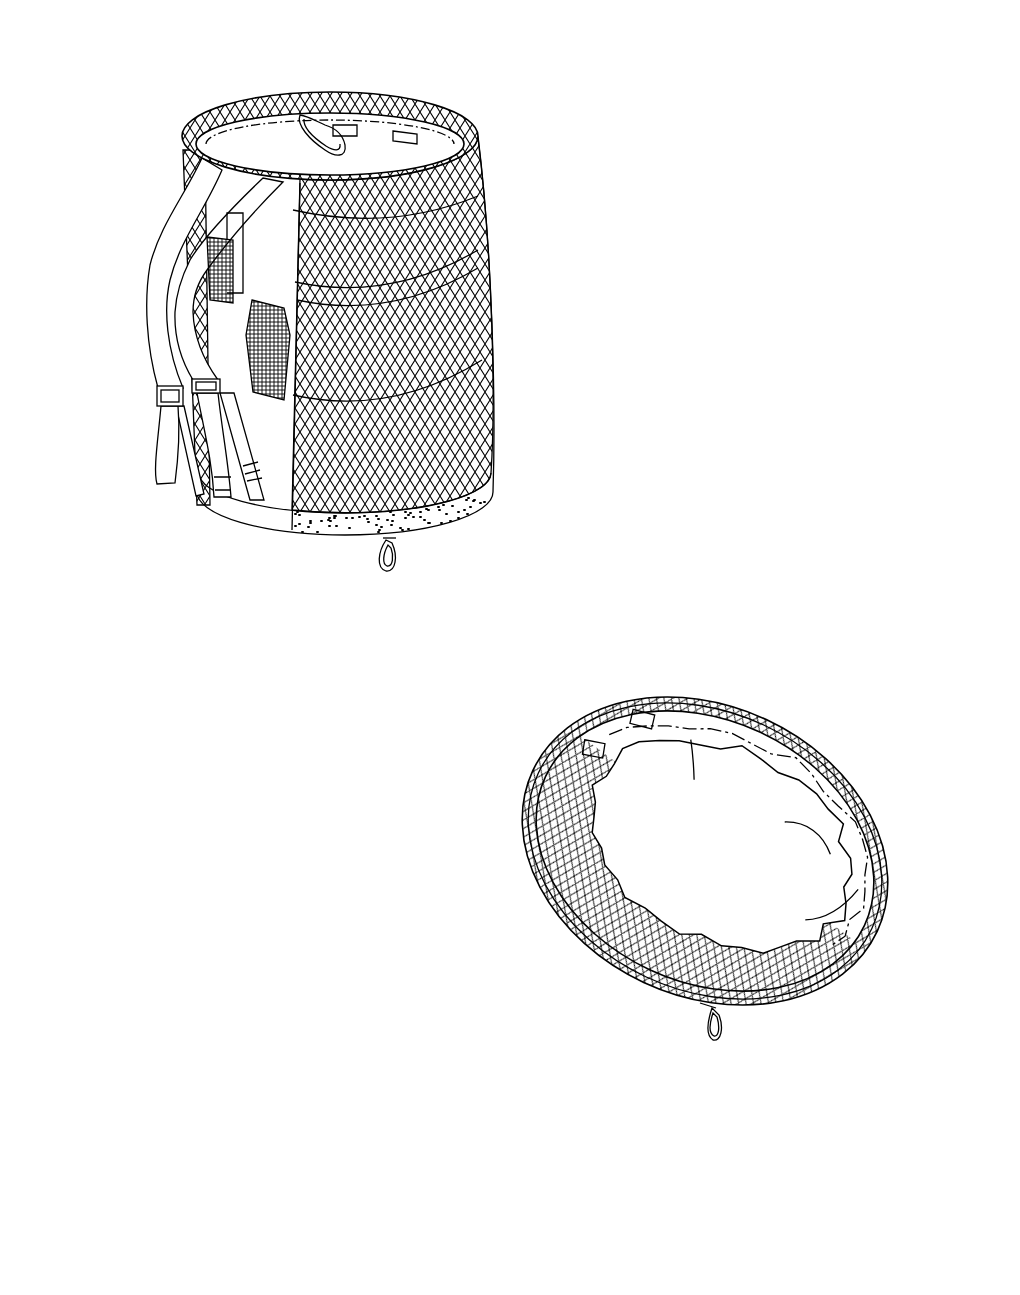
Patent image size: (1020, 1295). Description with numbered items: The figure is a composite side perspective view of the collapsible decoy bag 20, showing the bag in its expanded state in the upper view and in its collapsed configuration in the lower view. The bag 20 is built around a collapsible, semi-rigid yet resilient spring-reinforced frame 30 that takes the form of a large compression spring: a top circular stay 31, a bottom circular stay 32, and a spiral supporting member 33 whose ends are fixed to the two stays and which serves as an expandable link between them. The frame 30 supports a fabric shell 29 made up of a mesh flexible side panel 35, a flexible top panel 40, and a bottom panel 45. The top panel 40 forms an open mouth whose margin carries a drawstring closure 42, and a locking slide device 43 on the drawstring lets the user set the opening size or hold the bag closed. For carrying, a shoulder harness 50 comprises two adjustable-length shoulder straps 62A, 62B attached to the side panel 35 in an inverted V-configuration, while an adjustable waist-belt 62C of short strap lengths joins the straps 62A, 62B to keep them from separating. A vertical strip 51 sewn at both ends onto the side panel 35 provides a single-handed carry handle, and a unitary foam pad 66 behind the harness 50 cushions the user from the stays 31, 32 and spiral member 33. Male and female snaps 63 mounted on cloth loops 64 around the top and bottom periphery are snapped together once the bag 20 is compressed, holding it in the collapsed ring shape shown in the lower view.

The collapsible decoy bag 20 is at (695, 415).
The fabric shell 29 is at (515, 372).
The spring-reinforced frame 30 is at (489, 200).
The top circular stay 31 is at (459, 112).
The bottom circular stay 32 is at (496, 478).
The spiral supporting member 33 is at (480, 300).
The flexible side panel 35 is at (478, 258).
The flexible top panel 40 is at (300, 115).
The drawstring closure 42 is at (343, 158).
The locking slide device 43 is at (333, 107).
The bottom panel 45 is at (461, 507).
The shoulder harness 50 is at (122, 357).
The vertical strip 51 is at (217, 262).
The shoulder strap 62A is at (182, 217).
The shoulder strap 62B is at (252, 188).
The adjustable waist-belt 62C is at (188, 478).
The male and female snaps 63 is at (384, 568).
The cloth loops 64 is at (393, 545).
The unitary foam pad 66 is at (284, 442).